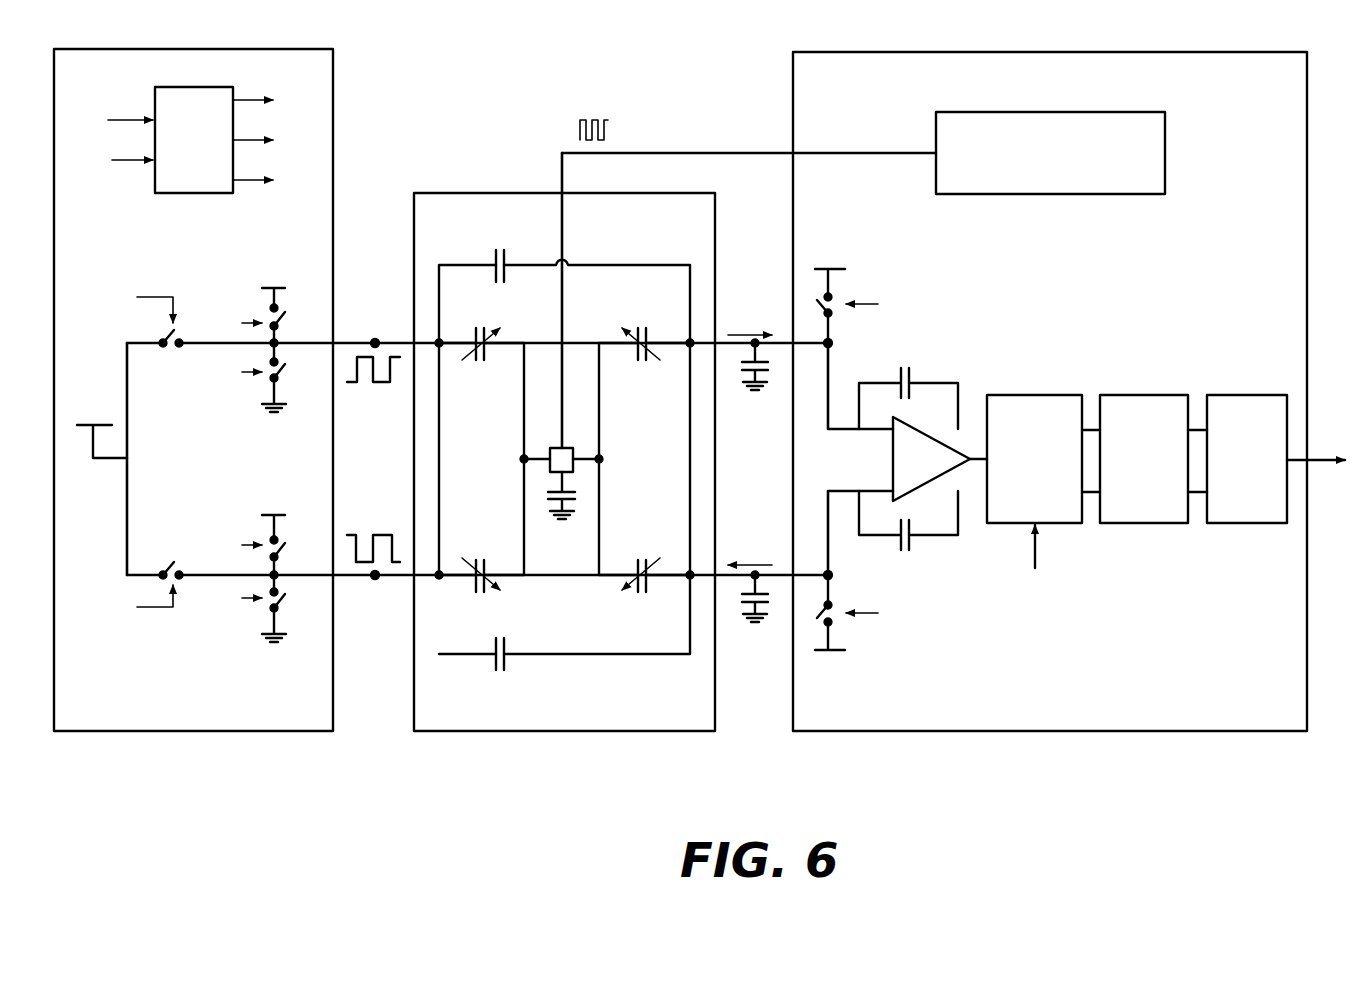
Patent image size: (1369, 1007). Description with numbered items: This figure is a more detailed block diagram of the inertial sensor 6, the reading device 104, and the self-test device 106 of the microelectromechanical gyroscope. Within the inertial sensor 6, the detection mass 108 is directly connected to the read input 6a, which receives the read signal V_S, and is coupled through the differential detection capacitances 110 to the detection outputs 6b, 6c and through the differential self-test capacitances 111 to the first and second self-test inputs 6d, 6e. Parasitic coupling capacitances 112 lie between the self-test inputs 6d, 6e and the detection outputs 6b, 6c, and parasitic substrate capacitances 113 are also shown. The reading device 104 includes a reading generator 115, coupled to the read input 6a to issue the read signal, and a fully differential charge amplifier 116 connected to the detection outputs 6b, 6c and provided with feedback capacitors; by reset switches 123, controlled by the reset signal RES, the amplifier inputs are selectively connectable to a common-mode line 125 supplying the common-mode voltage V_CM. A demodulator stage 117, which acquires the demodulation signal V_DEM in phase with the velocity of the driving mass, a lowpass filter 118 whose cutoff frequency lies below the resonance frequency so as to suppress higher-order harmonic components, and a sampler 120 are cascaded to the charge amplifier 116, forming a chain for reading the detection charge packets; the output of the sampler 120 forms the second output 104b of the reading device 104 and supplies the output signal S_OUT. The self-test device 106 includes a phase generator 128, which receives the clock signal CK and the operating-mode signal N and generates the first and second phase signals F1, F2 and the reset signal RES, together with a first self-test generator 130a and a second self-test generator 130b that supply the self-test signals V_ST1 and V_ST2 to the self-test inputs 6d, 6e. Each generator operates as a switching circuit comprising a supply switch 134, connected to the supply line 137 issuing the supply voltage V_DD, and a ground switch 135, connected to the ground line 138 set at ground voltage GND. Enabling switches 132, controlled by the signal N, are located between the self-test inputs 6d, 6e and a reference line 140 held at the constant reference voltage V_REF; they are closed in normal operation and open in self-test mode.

The inertial sensor 6 is at (588, 733).
The read input 6a is at (562, 152).
The detection output 6b is at (760, 346).
The detection output 6c is at (760, 579).
The first self-test input 6d is at (372, 342).
The second self-test input 6e is at (372, 578).
The reading device 104 is at (920, 733).
The second output 104b is at (1322, 464).
The self-test device 106 is at (196, 733).
The detection mass 108 is at (548, 474).
The differential detection capacitances 110 is at (641, 368).
The differential self-test capacitances 111 is at (481, 368).
The parasitic coupling capacitances 112 is at (505, 665).
The parasitic substrate capacitances 113 is at (576, 502).
The reading generator 115 is at (1078, 194).
The fully differential charge amplifier 116 is at (890, 460).
The demodulator stage 117 is at (1032, 394).
The lowpass filter 118 is at (1147, 524).
The sampler 120 is at (1240, 393).
The reset switches 123 is at (840, 607).
The common-mode line 125 is at (895, 675).
The phase generator 128 is at (150, 191).
The first self-test generator 130a is at (239, 460).
The second self-test generator 130b is at (250, 657).
The enabling switches 132 is at (168, 355).
The supply switch 134 is at (284, 535).
The ground switch 135 is at (286, 600).
The supply line 137 is at (262, 518).
The ground line 138 is at (268, 645).
The reference line 140 is at (90, 445).